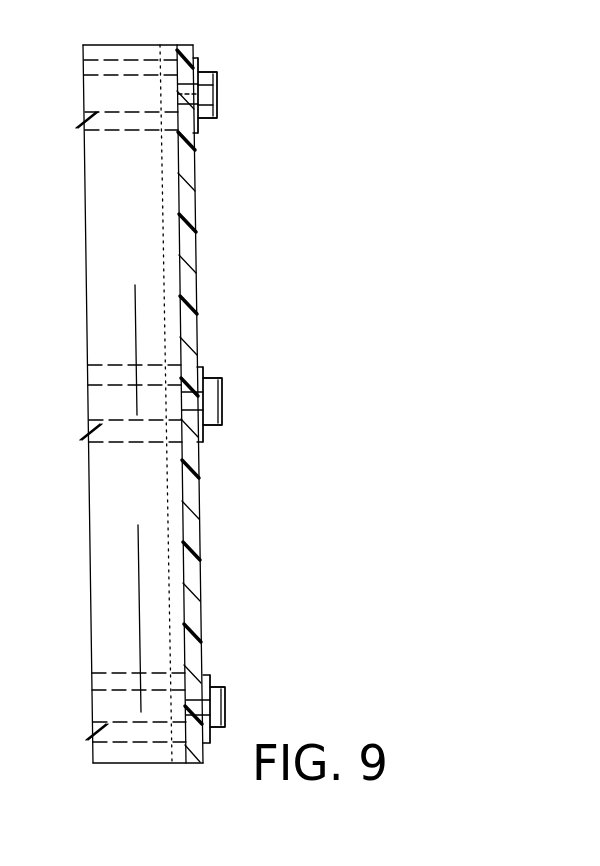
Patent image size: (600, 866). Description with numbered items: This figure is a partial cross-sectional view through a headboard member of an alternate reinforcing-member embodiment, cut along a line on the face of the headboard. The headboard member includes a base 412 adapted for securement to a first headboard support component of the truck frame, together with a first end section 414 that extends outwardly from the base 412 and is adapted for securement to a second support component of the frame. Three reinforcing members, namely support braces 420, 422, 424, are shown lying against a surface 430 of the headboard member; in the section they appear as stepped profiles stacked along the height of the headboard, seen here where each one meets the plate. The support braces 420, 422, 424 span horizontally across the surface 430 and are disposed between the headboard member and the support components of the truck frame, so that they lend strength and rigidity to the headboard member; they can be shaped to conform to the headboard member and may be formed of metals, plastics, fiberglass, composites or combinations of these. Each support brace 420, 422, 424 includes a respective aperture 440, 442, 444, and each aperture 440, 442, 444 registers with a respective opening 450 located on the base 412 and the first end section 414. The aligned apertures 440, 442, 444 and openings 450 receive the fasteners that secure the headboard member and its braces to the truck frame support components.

The base 412 is at (197, 325).
The first end section 414 is at (90, 222).
The support brace 420 is at (243, 77).
The support brace 422 is at (245, 398).
The support brace 424 is at (238, 690).
The surface 430 is at (197, 245).
The aperture 440 is at (215, 105).
The aperture 442 is at (223, 412).
The aperture 444 is at (227, 717).
The opening 450 is at (180, 105).